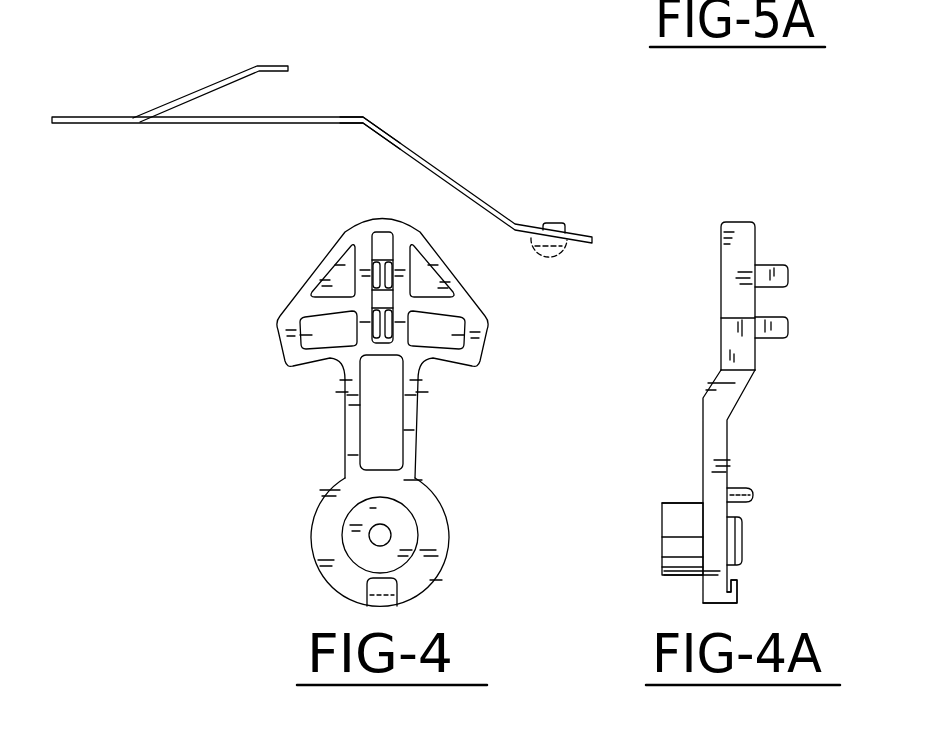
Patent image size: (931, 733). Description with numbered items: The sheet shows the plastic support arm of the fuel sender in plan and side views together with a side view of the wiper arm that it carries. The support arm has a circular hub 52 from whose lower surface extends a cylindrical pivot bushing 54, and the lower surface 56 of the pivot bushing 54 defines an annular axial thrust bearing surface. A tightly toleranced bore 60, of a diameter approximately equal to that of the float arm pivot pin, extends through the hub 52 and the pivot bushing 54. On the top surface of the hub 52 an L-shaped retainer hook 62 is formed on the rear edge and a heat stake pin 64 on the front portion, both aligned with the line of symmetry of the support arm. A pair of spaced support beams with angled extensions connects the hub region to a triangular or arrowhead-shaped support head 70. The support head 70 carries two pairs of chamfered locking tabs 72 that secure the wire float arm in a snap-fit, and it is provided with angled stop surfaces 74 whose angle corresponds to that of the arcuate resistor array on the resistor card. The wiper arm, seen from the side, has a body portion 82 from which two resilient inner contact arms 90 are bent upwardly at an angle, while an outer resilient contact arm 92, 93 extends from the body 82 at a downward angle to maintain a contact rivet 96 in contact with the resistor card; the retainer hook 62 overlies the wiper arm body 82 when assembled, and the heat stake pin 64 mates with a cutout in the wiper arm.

In FIG. 5A, the body portion 82 is at (67, 117).
In FIG. 5A, the inner contact arms 90 is at (212, 88).
In FIG. 5A, the outer resilient contact arm 92 is at (399, 87).
In FIG. 5A, the outer resilient contact arm 93 is at (421, 158).
In FIG. 5A, the contact rivet 96 is at (565, 254).
In FIG. 4A, the support head 70 is at (755, 243).
In FIG. 4, the chamfered locking tabs 72 is at (388, 238).
In FIG. 4A, the chamfered locking tabs 72 is at (787, 265).
In FIG. 4, the angled stop surfaces 74 is at (478, 345).
In FIG. 4A, the angled stop surfaces 74 is at (745, 355).
In FIG. 4A, the circular hub 52 is at (725, 463).
In FIG. 4, the cylindrical pivot bushing 54 is at (418, 528).
In FIG. 4A, the cylindrical pivot bushing 54 is at (686, 502).
In FIG. 4, the lower surface 56 is at (400, 517).
In FIG. 4A, the lower surface 56 is at (661, 503).
In FIG. 4, the bore 60 is at (382, 533).
In FIG. 4A, the L-shaped retainer hook 62 is at (738, 593).
In FIG. 4A, the heat stake pin 64 is at (743, 488).